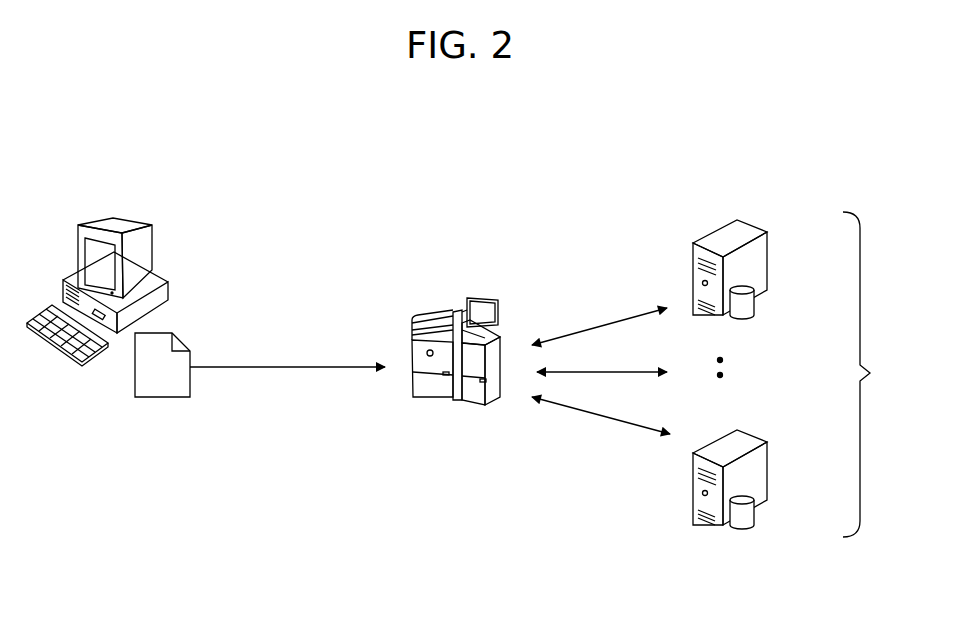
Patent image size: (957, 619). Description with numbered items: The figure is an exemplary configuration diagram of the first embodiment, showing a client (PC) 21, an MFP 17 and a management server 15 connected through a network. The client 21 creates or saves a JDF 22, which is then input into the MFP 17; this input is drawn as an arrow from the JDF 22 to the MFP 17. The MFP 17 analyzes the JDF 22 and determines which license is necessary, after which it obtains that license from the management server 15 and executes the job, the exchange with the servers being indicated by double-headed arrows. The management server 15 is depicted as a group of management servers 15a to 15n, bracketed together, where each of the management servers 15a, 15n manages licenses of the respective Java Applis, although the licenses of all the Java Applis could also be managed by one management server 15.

The client (PC) 21 is at (128, 228).
The JDF 22 is at (168, 333).
The MFP 17 is at (470, 295).
The management server 15a is at (767, 265).
The management server 15n is at (767, 473).
The management server 15 is at (873, 374).